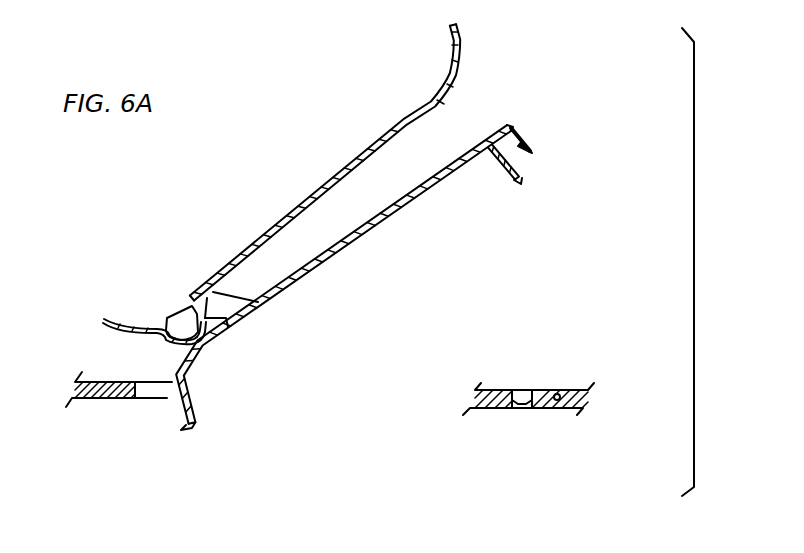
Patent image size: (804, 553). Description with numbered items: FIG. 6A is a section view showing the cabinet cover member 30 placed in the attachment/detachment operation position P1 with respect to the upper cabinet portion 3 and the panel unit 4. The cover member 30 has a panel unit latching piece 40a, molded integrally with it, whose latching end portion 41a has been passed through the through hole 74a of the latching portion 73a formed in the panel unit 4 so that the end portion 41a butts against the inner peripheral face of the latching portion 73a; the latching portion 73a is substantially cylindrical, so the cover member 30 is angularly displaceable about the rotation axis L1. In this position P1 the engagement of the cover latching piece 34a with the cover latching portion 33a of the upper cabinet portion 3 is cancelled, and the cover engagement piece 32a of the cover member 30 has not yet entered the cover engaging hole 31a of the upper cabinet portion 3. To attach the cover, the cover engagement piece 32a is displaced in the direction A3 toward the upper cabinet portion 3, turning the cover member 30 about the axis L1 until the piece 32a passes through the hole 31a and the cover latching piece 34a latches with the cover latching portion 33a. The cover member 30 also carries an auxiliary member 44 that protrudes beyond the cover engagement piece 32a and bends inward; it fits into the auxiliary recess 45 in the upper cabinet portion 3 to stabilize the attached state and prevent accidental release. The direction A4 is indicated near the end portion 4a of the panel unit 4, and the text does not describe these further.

The panel unit 4 is at (390, 116).
The upper panel end portion 4a is at (463, 53).
The cabinet cover member 30 is at (411, 188).
The cover latching piece 34a is at (192, 427).
The auxiliary member 44 is at (531, 151).
The cover engagement piece 32a is at (521, 183).
The attachment/detachment operation position P1 is at (481, 122).
The panel unit latching piece 40a is at (242, 286).
The latching end portion 41a is at (172, 318).
The rotation axis L1 is at (181, 320).
The latching portion 73a is at (165, 346).
The through hole 74a is at (206, 334).
The cover latching portion 33a is at (132, 398).
The upper cabinet portion 3 is at (579, 381).
The cover engaging hole 31a is at (518, 404).
The auxiliary recess 45 is at (558, 394).
The direction A4 is at (546, 61).
The direction A3 is at (597, 92).